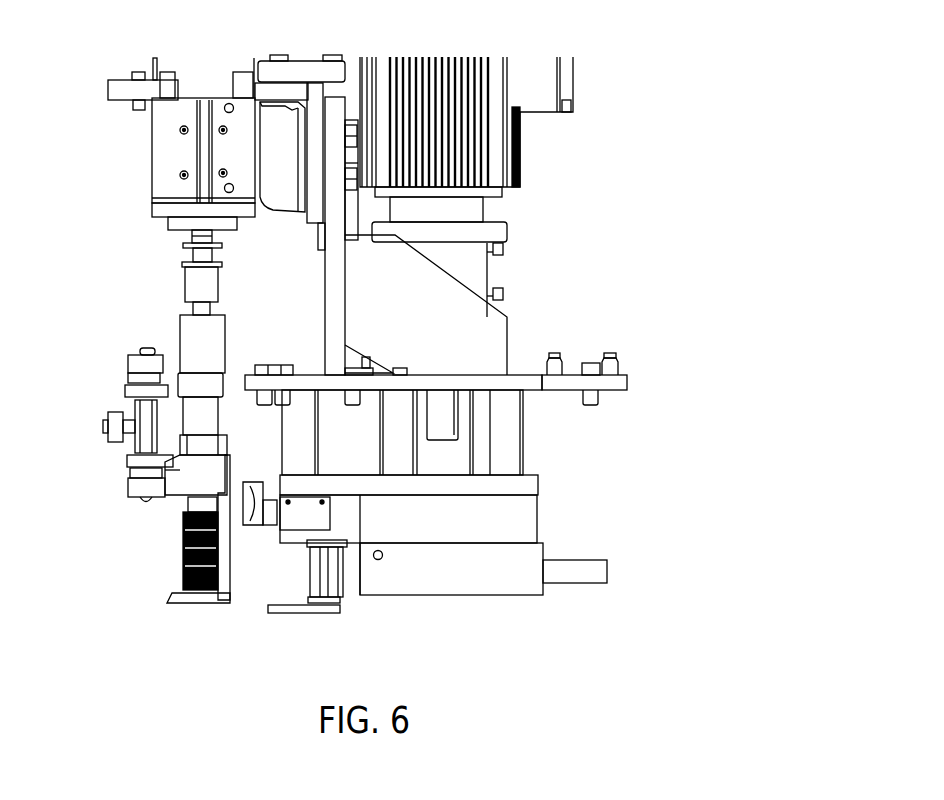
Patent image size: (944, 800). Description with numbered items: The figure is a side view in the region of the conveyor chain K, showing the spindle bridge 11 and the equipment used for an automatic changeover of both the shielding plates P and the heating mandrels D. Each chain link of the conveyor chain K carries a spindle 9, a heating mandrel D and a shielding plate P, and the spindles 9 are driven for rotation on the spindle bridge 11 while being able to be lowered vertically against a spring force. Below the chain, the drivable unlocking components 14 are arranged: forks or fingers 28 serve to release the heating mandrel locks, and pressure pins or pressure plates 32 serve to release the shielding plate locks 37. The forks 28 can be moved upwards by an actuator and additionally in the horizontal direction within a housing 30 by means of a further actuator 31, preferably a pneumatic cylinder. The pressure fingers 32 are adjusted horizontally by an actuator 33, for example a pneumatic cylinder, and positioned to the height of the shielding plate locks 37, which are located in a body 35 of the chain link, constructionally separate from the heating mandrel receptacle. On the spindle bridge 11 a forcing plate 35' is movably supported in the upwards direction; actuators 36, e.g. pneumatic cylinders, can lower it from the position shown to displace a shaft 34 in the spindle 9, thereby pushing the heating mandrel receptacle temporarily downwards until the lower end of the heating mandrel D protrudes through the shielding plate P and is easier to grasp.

The spindle 9 is at (215, 335).
The spindle bridge 11 is at (545, 174).
The unlocking components 14 is at (435, 574).
The forks or fingers 28 is at (282, 614).
The housing 30 is at (470, 596).
The further actuator 31 is at (585, 584).
The pressure pins or pressure plates 32 is at (251, 527).
The actuator 33 is at (323, 513).
The shaft 34 is at (210, 282).
The body of a chain link 35 is at (174, 509).
The forcing plate 35' is at (137, 241).
The actuators 36 is at (243, 82).
The shielding plate locks 37 is at (238, 473).
The conveyor chain K is at (111, 461).
The heating mandrel D is at (182, 538).
The shielding plate P is at (200, 604).